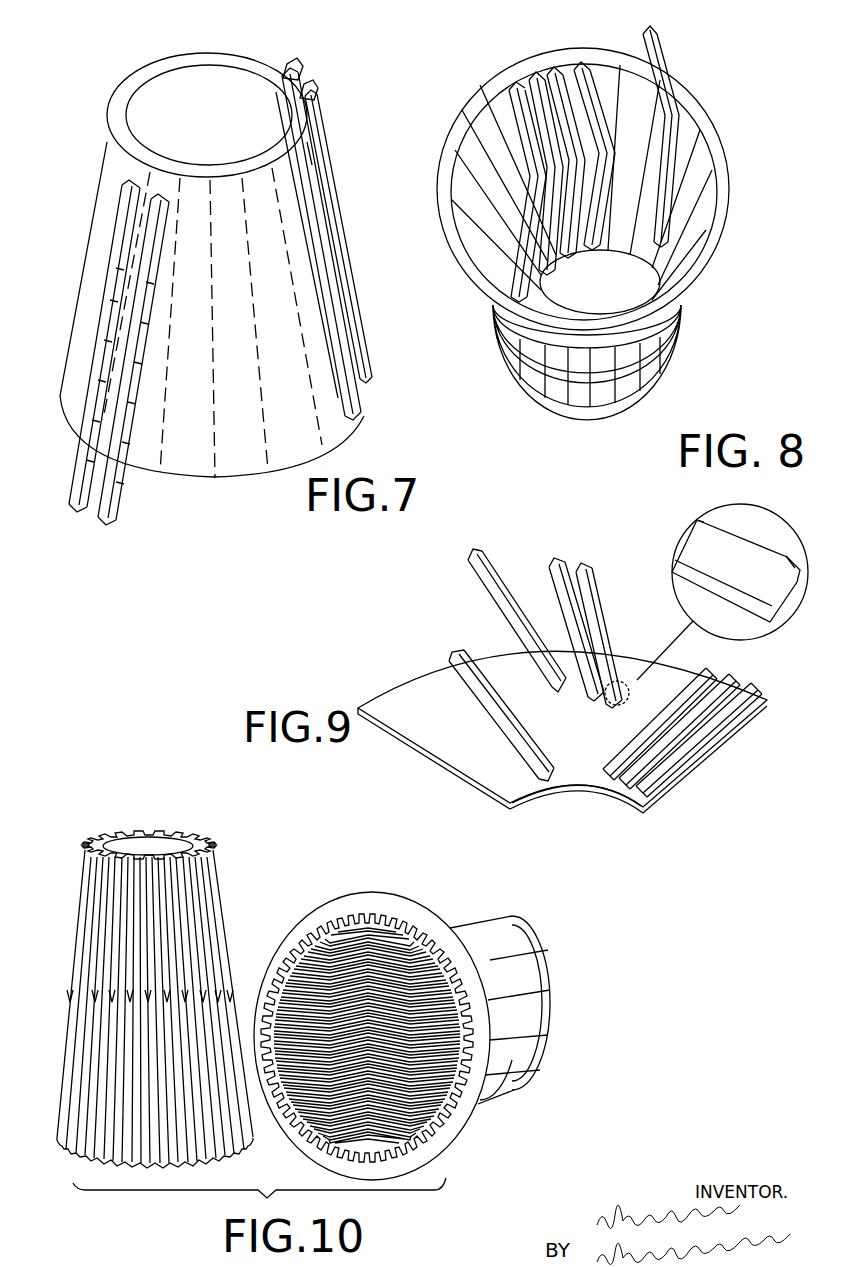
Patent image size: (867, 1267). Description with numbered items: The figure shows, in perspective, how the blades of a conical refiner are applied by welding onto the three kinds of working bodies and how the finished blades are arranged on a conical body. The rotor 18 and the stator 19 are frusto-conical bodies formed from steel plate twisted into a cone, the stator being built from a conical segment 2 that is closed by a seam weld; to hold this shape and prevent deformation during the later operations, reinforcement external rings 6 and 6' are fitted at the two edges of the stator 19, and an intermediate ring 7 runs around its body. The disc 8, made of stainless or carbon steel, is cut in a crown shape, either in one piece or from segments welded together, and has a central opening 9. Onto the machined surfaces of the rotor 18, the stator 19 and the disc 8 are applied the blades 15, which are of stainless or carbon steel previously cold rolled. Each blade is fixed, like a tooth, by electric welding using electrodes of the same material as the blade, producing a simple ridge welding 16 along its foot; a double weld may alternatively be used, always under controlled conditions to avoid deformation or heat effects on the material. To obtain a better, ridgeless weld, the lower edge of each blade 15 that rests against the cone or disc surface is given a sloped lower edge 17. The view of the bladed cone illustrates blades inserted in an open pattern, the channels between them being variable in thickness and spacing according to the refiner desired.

In FIG. 8, the conical segment 2 is at (703, 197).
In FIG. 8, the reinforcement external ring 6 is at (587, 381).
In FIG. 10, the reinforcement external ring 6 is at (527, 1010).
In FIG. 8, the reinforcement external ring 6' is at (731, 277).
In FIG. 10, the reinforcement external ring 6' is at (372, 1016).
In FIG. 8, the intermediate ring 7 is at (651, 366).
In FIG. 9, the disc 8 is at (518, 780).
In FIG. 9, the central opening 9 is at (583, 790).
In FIG. 7, the blade 15 is at (113, 350).
In FIG. 8, the blade 15 is at (557, 80).
In FIG. 9, the blade 15 is at (487, 673).
In FIG. 10, the blade 15 is at (203, 918).
In FIG. 7, the simple ridge welding 16 is at (306, 131).
In FIG. 8, the simple ridge welding 16 is at (596, 88).
In FIG. 9, the simple ridge welding 16 is at (463, 687).
In FIG. 7, the sloped lower edge 17 is at (277, 72).
In FIG. 9, the sloped lower edge 17 is at (606, 710).
In FIG. 7, the rotor 18 is at (222, 443).
In FIG. 10, the rotor 18 is at (127, 835).
In FIG. 8, the stator 19 is at (663, 331).
In FIG. 10, the stator 19 is at (507, 1080).